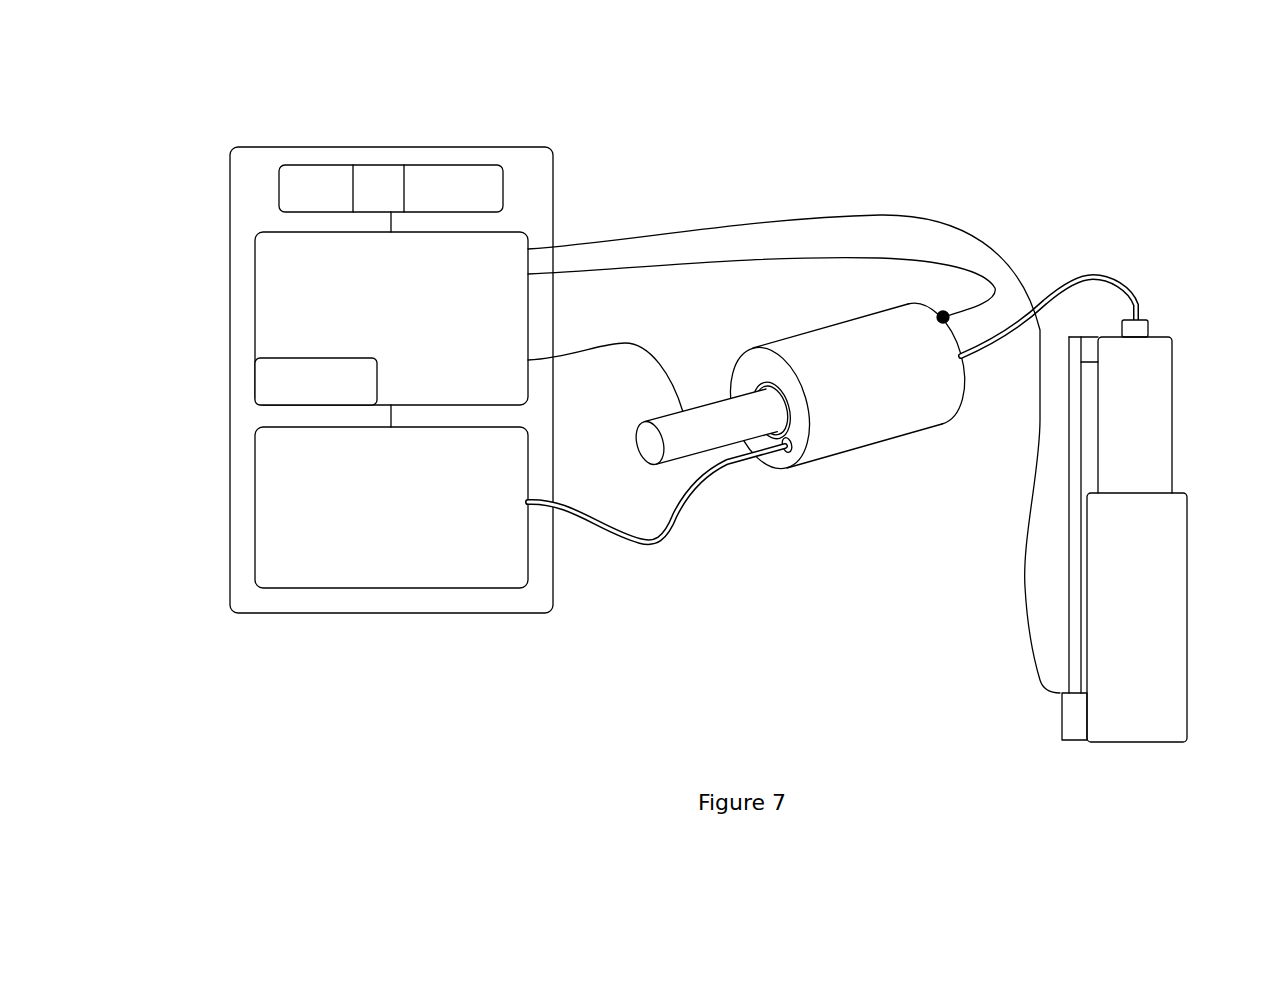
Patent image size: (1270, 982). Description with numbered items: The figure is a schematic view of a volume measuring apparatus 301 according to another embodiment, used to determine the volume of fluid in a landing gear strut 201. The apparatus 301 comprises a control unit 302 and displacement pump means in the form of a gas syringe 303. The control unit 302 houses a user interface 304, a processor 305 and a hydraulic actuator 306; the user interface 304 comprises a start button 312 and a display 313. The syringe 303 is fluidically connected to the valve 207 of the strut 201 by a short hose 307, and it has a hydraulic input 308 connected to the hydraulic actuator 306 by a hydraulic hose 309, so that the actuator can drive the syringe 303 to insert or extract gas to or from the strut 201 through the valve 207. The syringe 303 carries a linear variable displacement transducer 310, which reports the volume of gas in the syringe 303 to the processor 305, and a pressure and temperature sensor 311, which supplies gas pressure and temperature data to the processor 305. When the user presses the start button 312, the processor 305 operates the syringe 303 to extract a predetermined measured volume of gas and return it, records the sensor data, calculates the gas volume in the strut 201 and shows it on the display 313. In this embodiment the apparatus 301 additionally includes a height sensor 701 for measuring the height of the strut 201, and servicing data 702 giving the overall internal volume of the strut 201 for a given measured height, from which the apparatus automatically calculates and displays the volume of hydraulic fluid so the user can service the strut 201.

The strut 201 is at (1187, 712).
The valve 207 is at (1146, 320).
The apparatus 301 is at (852, 600).
The control unit 302 is at (473, 147).
The gas syringe 303 is at (827, 345).
The user interface 304 is at (392, 165).
The processor 305 is at (465, 231).
The hydraulic actuator 306 is at (391, 588).
The short hose 307 is at (1093, 277).
The hydraulic input 308 is at (787, 452).
The hydraulic hose 309 is at (652, 545).
The linear variable displacement transducer 310 is at (702, 420).
The pressure and temperature sensor 311 is at (949, 312).
The start button 312 is at (317, 165).
The display 313 is at (450, 165).
The height sensor 701 is at (1060, 718).
The servicing data 702 is at (268, 393).